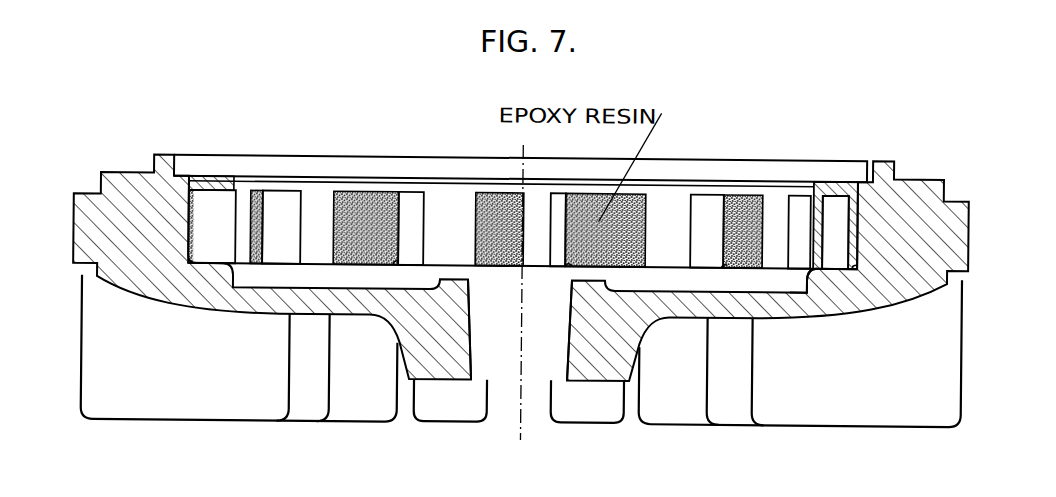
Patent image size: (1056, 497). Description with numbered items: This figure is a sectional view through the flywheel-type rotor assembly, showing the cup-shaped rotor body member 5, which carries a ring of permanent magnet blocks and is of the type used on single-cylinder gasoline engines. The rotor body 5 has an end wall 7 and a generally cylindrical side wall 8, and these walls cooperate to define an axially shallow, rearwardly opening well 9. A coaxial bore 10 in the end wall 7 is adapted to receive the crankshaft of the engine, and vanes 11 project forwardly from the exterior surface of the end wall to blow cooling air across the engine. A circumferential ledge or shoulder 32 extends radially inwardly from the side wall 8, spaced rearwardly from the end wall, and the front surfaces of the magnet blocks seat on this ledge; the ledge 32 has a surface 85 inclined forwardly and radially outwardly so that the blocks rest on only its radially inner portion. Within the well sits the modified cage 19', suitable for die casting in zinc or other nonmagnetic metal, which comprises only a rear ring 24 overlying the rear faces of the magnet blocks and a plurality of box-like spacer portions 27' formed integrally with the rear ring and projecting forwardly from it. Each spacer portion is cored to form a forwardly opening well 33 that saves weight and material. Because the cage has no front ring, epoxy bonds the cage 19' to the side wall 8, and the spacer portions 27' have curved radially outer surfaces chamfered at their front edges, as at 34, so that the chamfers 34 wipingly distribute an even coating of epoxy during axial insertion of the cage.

The rotor body member 5 is at (998, 235).
The end wall 7 is at (668, 287).
The side wall 8 is at (193, 226).
The well 9 is at (331, 281).
The bore 10 is at (572, 357).
The vanes 11 is at (378, 407).
The cage 19' is at (502, 160).
The rear ring 24 is at (372, 179).
The spacer portions 27' is at (536, 230).
The ledge 32 is at (817, 273).
The well 33 is at (833, 193).
The chamfers 34 is at (396, 265).
The surface 85 is at (198, 266).